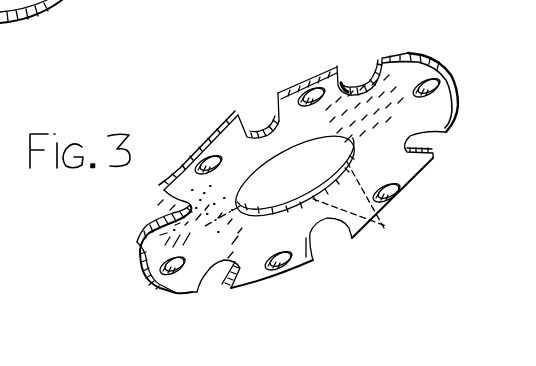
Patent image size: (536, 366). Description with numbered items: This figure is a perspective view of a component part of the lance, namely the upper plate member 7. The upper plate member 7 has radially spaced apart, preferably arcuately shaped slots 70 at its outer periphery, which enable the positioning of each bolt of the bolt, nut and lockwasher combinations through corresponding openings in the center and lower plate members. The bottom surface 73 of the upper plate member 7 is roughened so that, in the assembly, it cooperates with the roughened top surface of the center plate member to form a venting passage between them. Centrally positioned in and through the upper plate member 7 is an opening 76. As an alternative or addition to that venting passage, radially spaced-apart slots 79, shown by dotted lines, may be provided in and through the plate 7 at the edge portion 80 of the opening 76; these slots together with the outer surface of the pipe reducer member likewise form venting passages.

The upper plate member 7 is at (300, 279).
The arcuately shaped slots 70 is at (265, 97).
The bottom surface 73 is at (200, 222).
The centrally positioned opening 76 is at (301, 190).
The radially spaced-apart slots 79 is at (368, 205).
The edge portion 80 is at (269, 130).